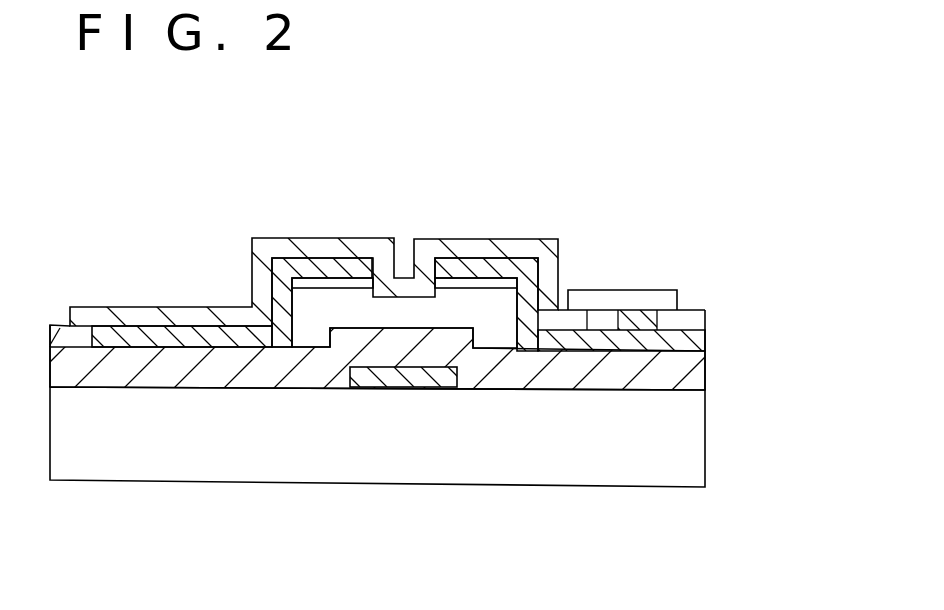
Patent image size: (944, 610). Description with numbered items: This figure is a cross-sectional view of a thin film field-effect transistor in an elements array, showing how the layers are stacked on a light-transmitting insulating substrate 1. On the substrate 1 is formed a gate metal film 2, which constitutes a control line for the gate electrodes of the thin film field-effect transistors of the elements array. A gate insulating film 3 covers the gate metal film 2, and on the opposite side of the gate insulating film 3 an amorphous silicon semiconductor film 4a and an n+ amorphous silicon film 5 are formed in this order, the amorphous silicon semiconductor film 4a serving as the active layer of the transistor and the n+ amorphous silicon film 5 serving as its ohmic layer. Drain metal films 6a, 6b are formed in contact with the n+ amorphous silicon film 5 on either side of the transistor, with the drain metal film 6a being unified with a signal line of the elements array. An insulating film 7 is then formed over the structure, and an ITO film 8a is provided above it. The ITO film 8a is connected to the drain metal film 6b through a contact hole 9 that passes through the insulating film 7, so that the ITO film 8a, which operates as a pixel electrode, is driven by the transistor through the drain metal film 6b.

The light-transmitting insulating substrate 1 is at (83, 463).
The gate metal film 2 is at (370, 385).
The gate insulating film 3 is at (698, 373).
The amorphous silicon semiconductor film 4a is at (482, 308).
The n+ amorphous silicon film 5 is at (453, 286).
The drain metal film 6a is at (325, 267).
The drain metal film 6b is at (550, 272).
The insulating film 7 is at (101, 317).
The ITO film 8a is at (665, 300).
The contact hole 9 is at (605, 317).